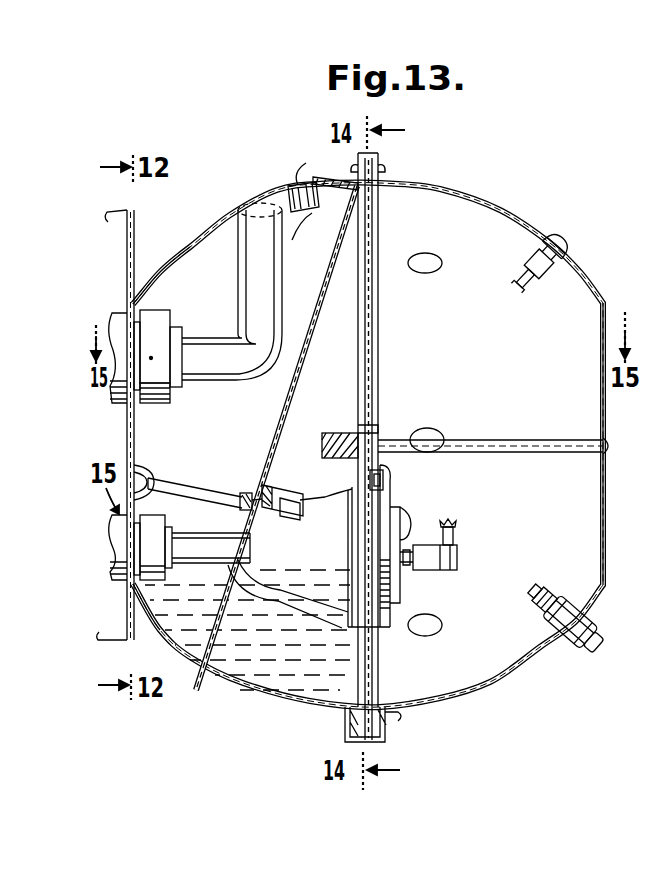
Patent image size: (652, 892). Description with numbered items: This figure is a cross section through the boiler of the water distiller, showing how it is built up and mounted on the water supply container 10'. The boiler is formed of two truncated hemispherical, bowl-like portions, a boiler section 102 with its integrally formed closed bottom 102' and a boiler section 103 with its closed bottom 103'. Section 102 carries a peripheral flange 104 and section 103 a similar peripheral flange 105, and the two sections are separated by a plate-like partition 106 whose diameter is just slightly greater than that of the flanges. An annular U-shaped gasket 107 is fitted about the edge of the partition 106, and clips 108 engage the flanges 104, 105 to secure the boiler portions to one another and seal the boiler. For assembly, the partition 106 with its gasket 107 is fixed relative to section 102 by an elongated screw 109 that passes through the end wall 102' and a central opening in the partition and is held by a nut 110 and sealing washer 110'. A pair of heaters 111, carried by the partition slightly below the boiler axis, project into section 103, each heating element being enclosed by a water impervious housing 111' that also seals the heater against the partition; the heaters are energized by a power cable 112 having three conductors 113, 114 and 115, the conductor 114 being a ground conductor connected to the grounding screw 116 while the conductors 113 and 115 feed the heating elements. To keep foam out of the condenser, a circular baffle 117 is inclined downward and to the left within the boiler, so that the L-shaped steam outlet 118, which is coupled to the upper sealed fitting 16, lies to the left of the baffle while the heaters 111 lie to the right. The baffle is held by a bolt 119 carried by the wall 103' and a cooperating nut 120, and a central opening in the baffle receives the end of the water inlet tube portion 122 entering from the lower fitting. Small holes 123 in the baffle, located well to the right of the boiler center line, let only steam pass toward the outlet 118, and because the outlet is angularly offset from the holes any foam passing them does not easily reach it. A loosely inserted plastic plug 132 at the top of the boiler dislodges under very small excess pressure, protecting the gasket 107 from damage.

The container 10' is at (134, 425).
The upper sealed fitting 16 is at (107, 300).
The boiler section 102 is at (368, 434).
The end wall of boiler section 102' is at (626, 444).
The boiler section 103 is at (165, 249).
The wall of boiler section 103' is at (168, 521).
The peripheral flange 104 is at (386, 178).
The peripheral flange 105 is at (352, 181).
The partition 106 is at (372, 367).
The gasket 107 is at (378, 333).
The clips 108 is at (393, 733).
The elongated screw 109 is at (475, 440).
The nut 110 is at (333, 421).
The sealing washer 110' is at (392, 407).
The heaters 111 is at (316, 489).
The water impervious housing 111' is at (288, 575).
The power cable 112 is at (385, 481).
The conductor 113 is at (545, 606).
The ground conductor 114 is at (546, 596).
The conductor 115 is at (556, 592).
The grounding screw 116 is at (531, 273).
The baffle 117 is at (282, 383).
The L-shaped steam outlet 118 is at (240, 275).
The bolt 119 is at (191, 475).
The nut 120 is at (279, 488).
The water inlet tube portion 122 is at (198, 565).
The small holes 123 is at (297, 241).
The plug 132 is at (300, 180).